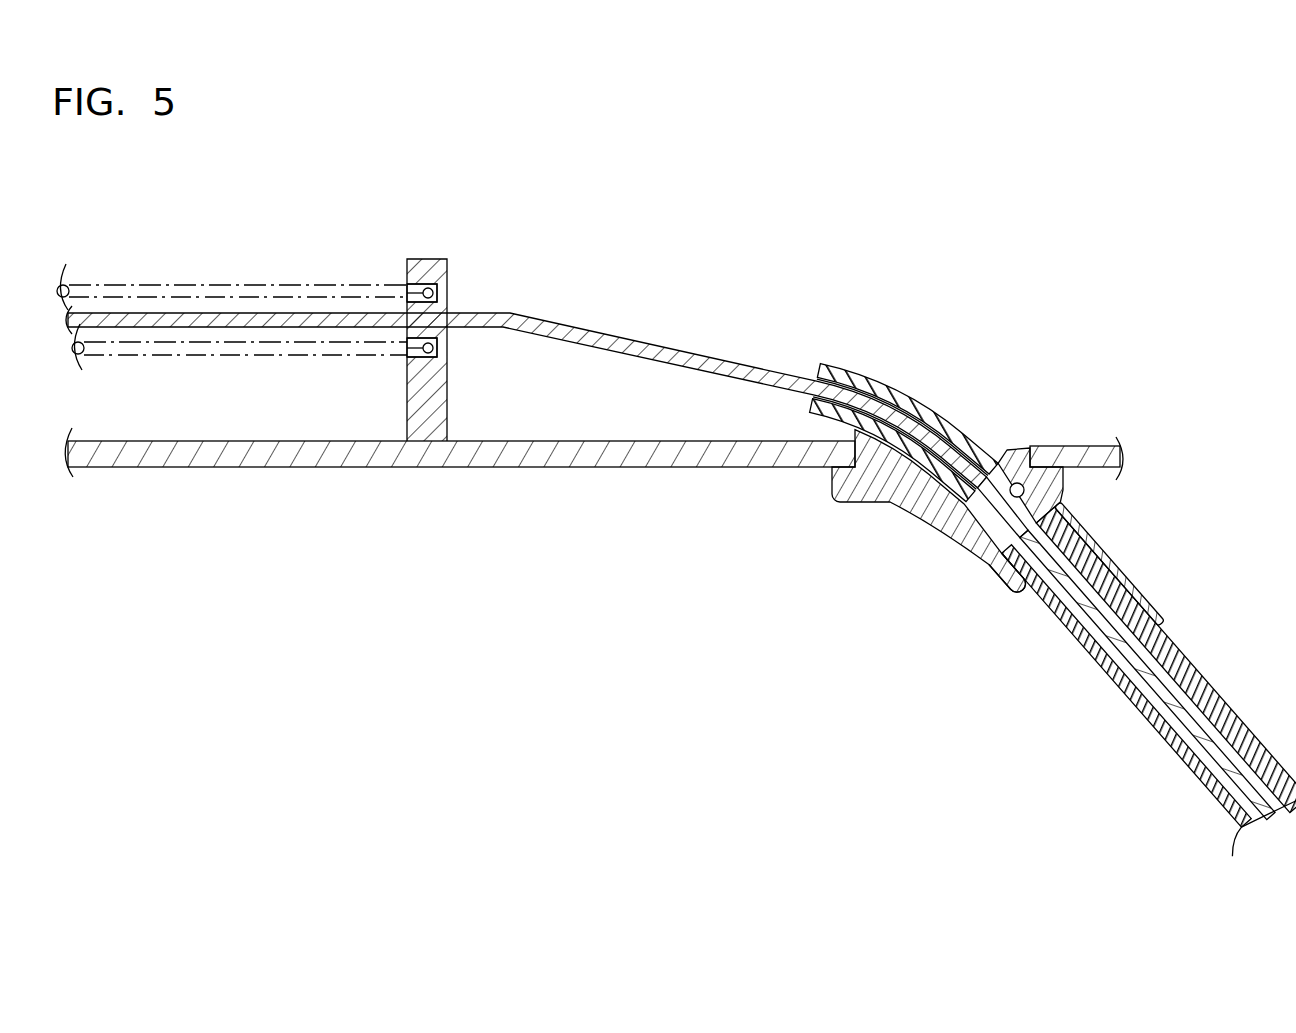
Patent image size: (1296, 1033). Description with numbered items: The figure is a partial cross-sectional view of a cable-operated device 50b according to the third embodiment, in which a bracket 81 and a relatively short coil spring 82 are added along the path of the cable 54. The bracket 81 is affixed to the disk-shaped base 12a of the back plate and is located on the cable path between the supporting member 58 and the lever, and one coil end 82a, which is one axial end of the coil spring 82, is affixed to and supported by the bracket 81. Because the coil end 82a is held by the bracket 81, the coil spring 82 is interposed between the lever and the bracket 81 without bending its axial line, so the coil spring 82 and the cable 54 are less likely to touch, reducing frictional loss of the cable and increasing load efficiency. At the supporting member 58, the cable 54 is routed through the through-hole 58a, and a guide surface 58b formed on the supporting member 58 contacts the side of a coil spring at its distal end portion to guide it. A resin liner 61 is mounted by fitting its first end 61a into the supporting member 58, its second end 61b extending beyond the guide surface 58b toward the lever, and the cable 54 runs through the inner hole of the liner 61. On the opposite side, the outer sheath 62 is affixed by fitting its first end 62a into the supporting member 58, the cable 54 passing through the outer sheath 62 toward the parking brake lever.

The base 12a is at (146, 452).
The cable-operated device 50b is at (972, 222).
The cable 54 is at (1167, 690).
The supporting member 58 is at (954, 512).
The through-hole 58a is at (1023, 530).
The guide surface 58b is at (926, 478).
The liner 61 is at (910, 388).
The first end of the liner 61a is at (1018, 478).
The second end of the liner 61b is at (818, 364).
The outer sheath 62 is at (1139, 677).
The first end of the outer sheath 62a is at (1063, 492).
The bracket 81 is at (421, 266).
The coil spring 82 is at (262, 278).
The coil end 82a is at (437, 290).